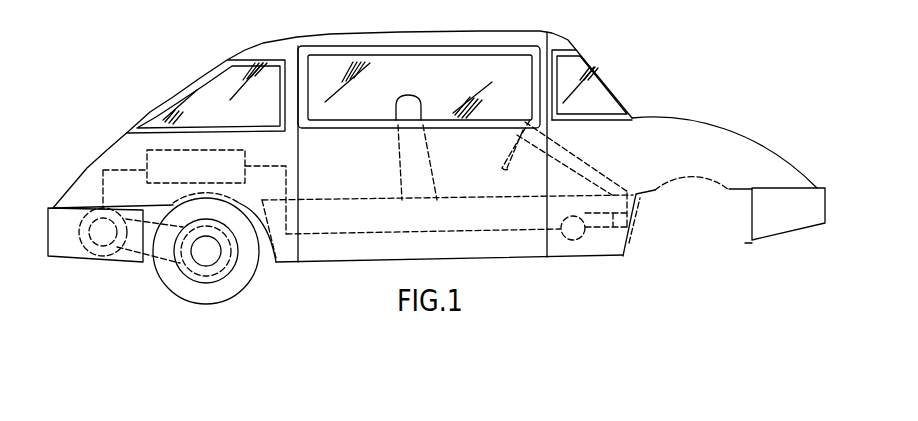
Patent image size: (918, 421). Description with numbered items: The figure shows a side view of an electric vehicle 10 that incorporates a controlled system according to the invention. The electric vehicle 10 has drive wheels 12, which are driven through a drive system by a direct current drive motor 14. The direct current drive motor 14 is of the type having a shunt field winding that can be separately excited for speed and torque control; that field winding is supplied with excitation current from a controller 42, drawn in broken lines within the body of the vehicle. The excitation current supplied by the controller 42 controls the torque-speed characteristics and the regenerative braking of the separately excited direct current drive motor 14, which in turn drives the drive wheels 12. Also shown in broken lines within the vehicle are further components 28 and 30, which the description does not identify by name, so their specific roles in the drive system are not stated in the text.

The electric vehicle 10 is at (638, 88).
The drive wheels 12 is at (247, 307).
The direct current drive motor 14 is at (82, 238).
The actuating mechanism 28 is at (617, 209).
The drive unit 30 is at (560, 217).
The controller 42 is at (245, 160).